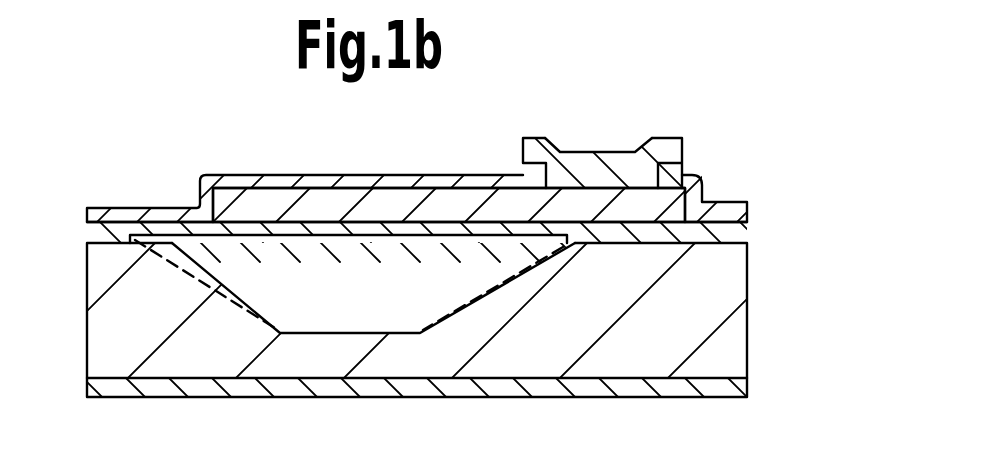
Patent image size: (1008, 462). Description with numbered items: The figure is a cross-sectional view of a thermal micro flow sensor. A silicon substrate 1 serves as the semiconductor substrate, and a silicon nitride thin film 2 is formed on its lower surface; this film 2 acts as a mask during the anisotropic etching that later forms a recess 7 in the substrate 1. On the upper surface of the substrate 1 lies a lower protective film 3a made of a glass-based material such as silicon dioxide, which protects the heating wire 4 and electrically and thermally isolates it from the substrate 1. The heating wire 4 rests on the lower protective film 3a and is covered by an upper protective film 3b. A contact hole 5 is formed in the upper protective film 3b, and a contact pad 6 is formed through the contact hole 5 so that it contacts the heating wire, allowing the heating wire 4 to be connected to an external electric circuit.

The silicon substrate 1 is at (733, 343).
The silicon nitride thin film 2 is at (748, 385).
The lower protective film 3a is at (667, 233).
The upper protective film 3b is at (142, 216).
The heating wire 4 is at (667, 202).
The contact hole 5 is at (650, 168).
The contact pad 6 is at (620, 160).
The recess 7 is at (365, 300).